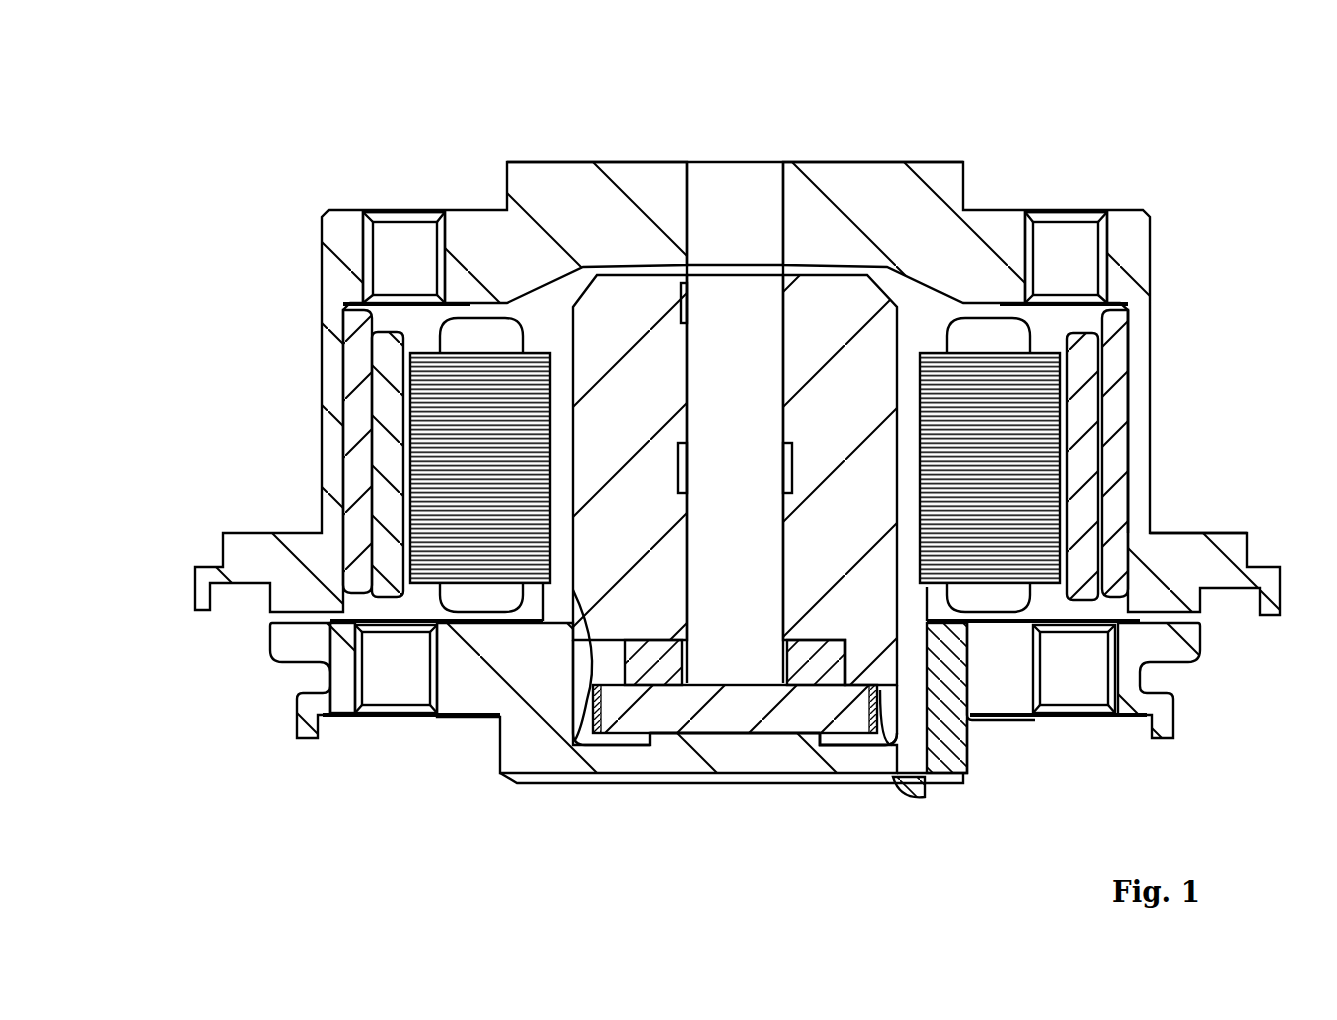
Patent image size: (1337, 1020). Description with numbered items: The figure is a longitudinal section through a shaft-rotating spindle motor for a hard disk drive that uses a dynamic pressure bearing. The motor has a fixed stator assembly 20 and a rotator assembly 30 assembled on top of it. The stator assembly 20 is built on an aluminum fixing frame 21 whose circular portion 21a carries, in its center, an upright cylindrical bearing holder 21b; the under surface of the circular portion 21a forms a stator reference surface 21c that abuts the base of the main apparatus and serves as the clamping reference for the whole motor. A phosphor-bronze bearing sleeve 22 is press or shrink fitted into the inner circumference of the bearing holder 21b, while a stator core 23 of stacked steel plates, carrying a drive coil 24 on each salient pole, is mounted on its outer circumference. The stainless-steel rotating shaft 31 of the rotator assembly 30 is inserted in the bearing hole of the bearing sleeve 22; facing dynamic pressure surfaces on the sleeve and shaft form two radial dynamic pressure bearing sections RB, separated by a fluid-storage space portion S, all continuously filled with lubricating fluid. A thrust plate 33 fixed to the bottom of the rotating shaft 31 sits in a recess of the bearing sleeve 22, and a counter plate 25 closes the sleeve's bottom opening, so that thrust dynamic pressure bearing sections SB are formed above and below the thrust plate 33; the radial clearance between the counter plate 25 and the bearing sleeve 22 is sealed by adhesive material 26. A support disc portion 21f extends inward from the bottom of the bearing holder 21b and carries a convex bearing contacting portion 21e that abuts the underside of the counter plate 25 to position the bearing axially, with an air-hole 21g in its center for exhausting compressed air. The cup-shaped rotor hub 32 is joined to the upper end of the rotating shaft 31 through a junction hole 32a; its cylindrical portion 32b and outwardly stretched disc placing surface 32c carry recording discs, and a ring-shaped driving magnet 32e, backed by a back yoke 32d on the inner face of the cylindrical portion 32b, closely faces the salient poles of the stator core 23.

The stator assembly 20 is at (395, 750).
The fixing frame 21 is at (980, 677).
The circular portion 21a is at (297, 740).
The bearing holder 21b is at (576, 700).
The stator reference surface 21c is at (463, 718).
The bearing contacting portion 21e is at (767, 723).
The support disc portion 21f is at (848, 770).
The air-hole 21g is at (726, 757).
The bearing sleeve 22 is at (858, 343).
The stator core 23 is at (1042, 449).
The drive coil 24 is at (993, 603).
The counter plate 25 is at (638, 703).
The adhesive material 26 is at (905, 790).
The rotator assembly 30 is at (1192, 268).
The rotating shaft 31 is at (758, 476).
The rotor hub 32 is at (997, 227).
The junction hole 32a is at (783, 197).
The cylindrical portion 32b is at (1142, 345).
The disc placing surface 32c is at (1210, 537).
The back yoke 32d is at (1117, 578).
The driving magnet 32e is at (1120, 643).
The thrust plate 33 is at (678, 670).
The radial dynamic pressure bearing section RB is at (686, 395).
The fluid-storage space portion S is at (794, 460).
The thrust dynamic pressure bearing section SB is at (828, 690).